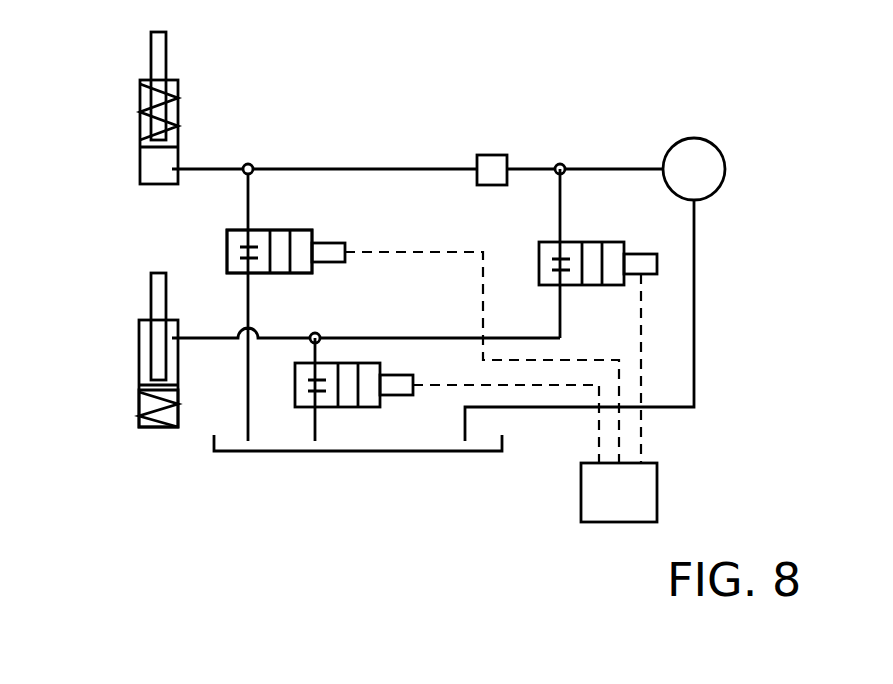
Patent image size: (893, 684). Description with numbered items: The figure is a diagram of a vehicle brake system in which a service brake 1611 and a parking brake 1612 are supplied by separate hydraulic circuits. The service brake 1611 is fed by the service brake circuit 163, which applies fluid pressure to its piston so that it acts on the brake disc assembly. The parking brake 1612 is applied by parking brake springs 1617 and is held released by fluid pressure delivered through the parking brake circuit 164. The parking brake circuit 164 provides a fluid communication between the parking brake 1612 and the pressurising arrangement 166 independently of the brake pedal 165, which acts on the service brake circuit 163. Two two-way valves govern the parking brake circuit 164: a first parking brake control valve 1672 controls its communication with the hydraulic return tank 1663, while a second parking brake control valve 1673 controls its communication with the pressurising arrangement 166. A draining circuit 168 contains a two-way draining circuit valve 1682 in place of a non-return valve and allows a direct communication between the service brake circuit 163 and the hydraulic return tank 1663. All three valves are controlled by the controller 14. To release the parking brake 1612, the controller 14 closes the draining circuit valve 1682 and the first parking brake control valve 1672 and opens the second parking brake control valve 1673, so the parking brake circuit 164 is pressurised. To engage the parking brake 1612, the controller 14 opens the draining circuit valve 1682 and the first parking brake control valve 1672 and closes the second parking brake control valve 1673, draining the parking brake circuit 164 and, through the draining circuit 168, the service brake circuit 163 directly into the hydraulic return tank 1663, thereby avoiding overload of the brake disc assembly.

The controller 14 is at (657, 492).
The service brake circuit 163 is at (217, 168).
The parking brake circuit 164 is at (207, 338).
The brake pedal 165 is at (493, 155).
The pressurising arrangement 166 is at (698, 138).
The draining circuit 168 is at (247, 295).
The service brake 1611 is at (138, 112).
The parking brake 1612 is at (138, 408).
The parking brake spring 1617 is at (160, 427).
The hydraulic return tank 1663 is at (442, 452).
The first parking brake control valve 1672 is at (347, 408).
The second parking brake control valve 1673 is at (592, 287).
The draining circuit valve 1682 is at (227, 246).